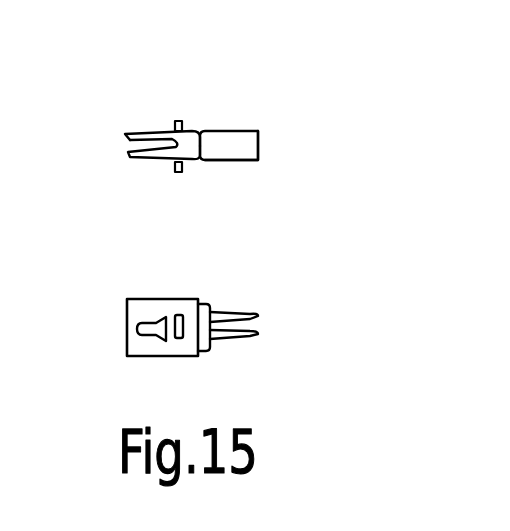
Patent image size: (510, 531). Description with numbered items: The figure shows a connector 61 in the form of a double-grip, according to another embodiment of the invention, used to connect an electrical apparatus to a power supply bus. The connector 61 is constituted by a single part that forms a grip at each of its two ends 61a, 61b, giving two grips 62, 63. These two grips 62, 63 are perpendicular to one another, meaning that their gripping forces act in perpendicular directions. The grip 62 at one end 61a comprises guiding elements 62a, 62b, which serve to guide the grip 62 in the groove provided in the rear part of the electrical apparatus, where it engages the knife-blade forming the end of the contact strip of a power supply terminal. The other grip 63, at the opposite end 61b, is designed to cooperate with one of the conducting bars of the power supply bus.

The connector 61 is at (258, 110).
The first end of the connector 61a is at (147, 123).
The second end of the connector 61b is at (268, 153).
The grip 62 is at (160, 147).
The guiding element 62a is at (178, 121).
The guiding element 62b is at (181, 173).
The grip 63 is at (228, 145).